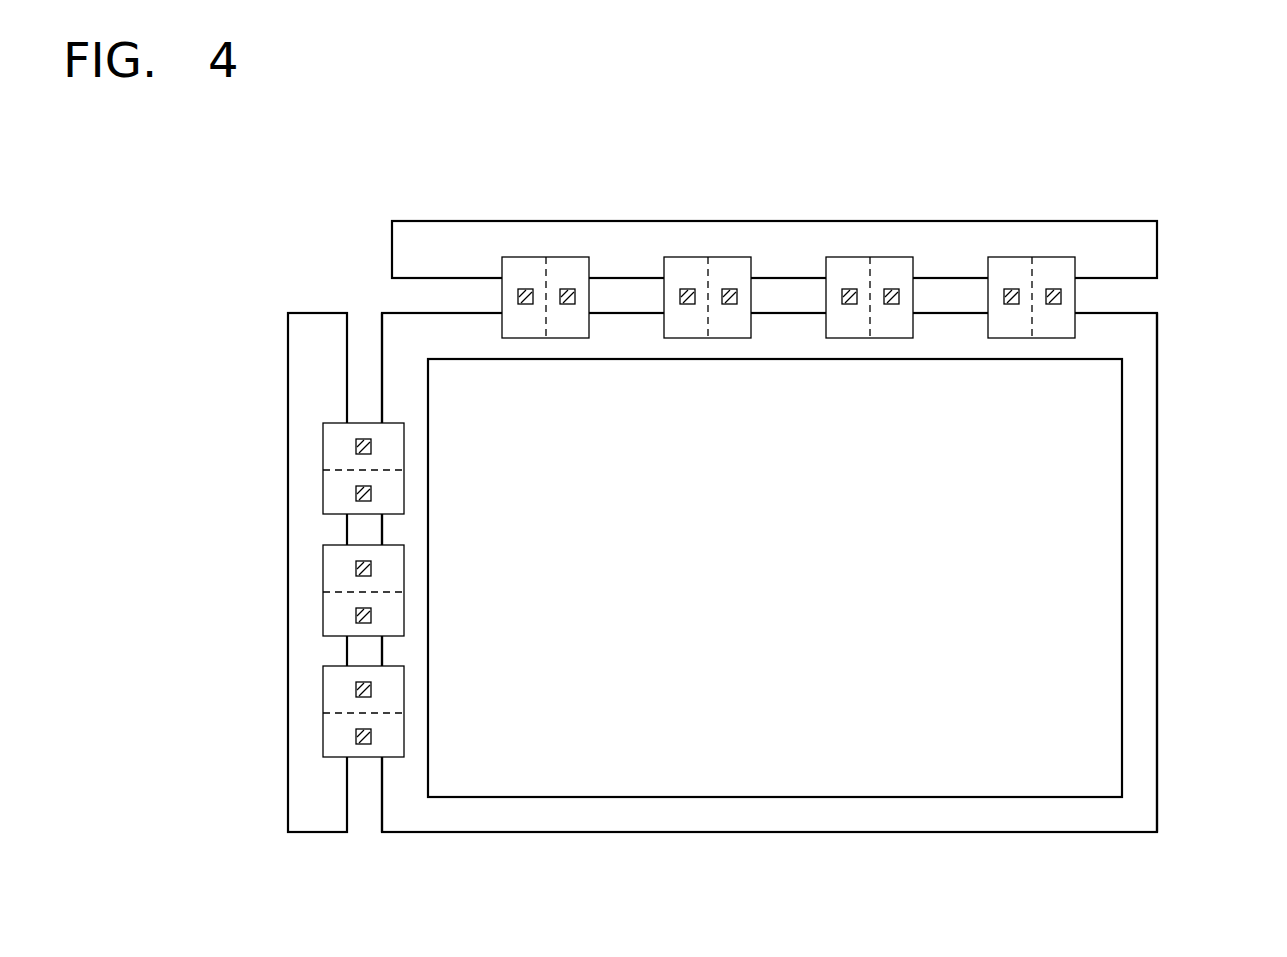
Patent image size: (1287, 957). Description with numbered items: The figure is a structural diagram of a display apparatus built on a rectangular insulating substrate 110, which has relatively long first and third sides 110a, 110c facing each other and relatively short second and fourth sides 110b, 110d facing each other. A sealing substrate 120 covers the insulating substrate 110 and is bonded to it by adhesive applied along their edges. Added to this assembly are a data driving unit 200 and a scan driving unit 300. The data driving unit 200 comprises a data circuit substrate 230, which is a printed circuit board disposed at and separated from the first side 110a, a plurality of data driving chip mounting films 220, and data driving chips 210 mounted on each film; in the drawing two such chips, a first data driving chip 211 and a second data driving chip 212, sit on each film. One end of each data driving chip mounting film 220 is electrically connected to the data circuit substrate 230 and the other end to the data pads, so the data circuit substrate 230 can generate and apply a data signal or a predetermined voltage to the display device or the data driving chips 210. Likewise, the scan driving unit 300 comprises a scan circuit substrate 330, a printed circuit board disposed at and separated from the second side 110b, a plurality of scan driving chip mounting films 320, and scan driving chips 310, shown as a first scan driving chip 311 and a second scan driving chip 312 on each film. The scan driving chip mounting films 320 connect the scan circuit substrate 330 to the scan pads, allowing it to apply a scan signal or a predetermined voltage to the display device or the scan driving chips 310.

The insulating substrate 110 is at (721, 569).
The first side 110a is at (1115, 313).
The second side 110b is at (382, 383).
The third side 110c is at (1115, 832).
The fourth side 110d is at (1157, 373).
The sealing substrate 120 is at (1122, 657).
The data driving unit 200 is at (777, 211).
The data driving chips 210 is at (793, 214).
The first data driving chip 211 is at (1012, 287).
The second data driving chip 212 is at (1056, 287).
The data driving chip mounting films 220 is at (1067, 263).
The data circuit substrate 230 is at (1130, 232).
The scan driving unit 300 is at (247, 572).
The scan driving chips 310 is at (261, 591).
The first scan driving chip 311 is at (357, 683).
The second scan driving chip 312 is at (357, 727).
The scan driving chip mounting films 320 is at (333, 741).
The scan circuit substrate 330 is at (297, 797).